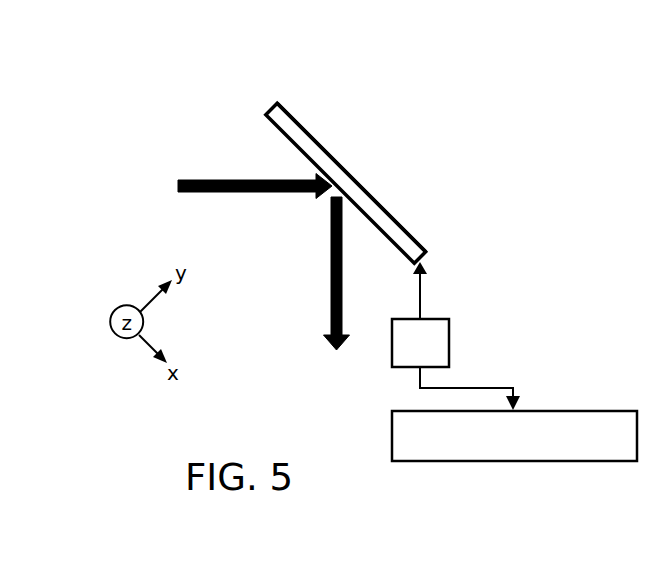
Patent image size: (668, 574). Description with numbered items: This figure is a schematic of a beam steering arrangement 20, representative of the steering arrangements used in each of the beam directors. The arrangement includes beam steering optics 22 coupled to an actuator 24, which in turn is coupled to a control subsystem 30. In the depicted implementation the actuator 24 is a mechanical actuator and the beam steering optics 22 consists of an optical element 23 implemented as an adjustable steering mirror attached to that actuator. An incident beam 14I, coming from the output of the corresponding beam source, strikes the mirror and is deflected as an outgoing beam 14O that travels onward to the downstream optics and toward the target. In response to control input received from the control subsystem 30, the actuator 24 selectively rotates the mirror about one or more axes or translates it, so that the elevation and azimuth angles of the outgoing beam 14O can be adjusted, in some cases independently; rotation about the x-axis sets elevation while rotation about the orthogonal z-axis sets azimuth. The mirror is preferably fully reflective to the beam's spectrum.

The incident beam 14I is at (198, 180).
The outgoing beam 14O is at (330, 293).
The beam steering arrangement 20 is at (482, 216).
The beam steering optics 22 is at (326, 121).
The optical element 23 is at (273, 108).
The actuator 24 is at (456, 336).
The control subsystem 30 is at (468, 461).